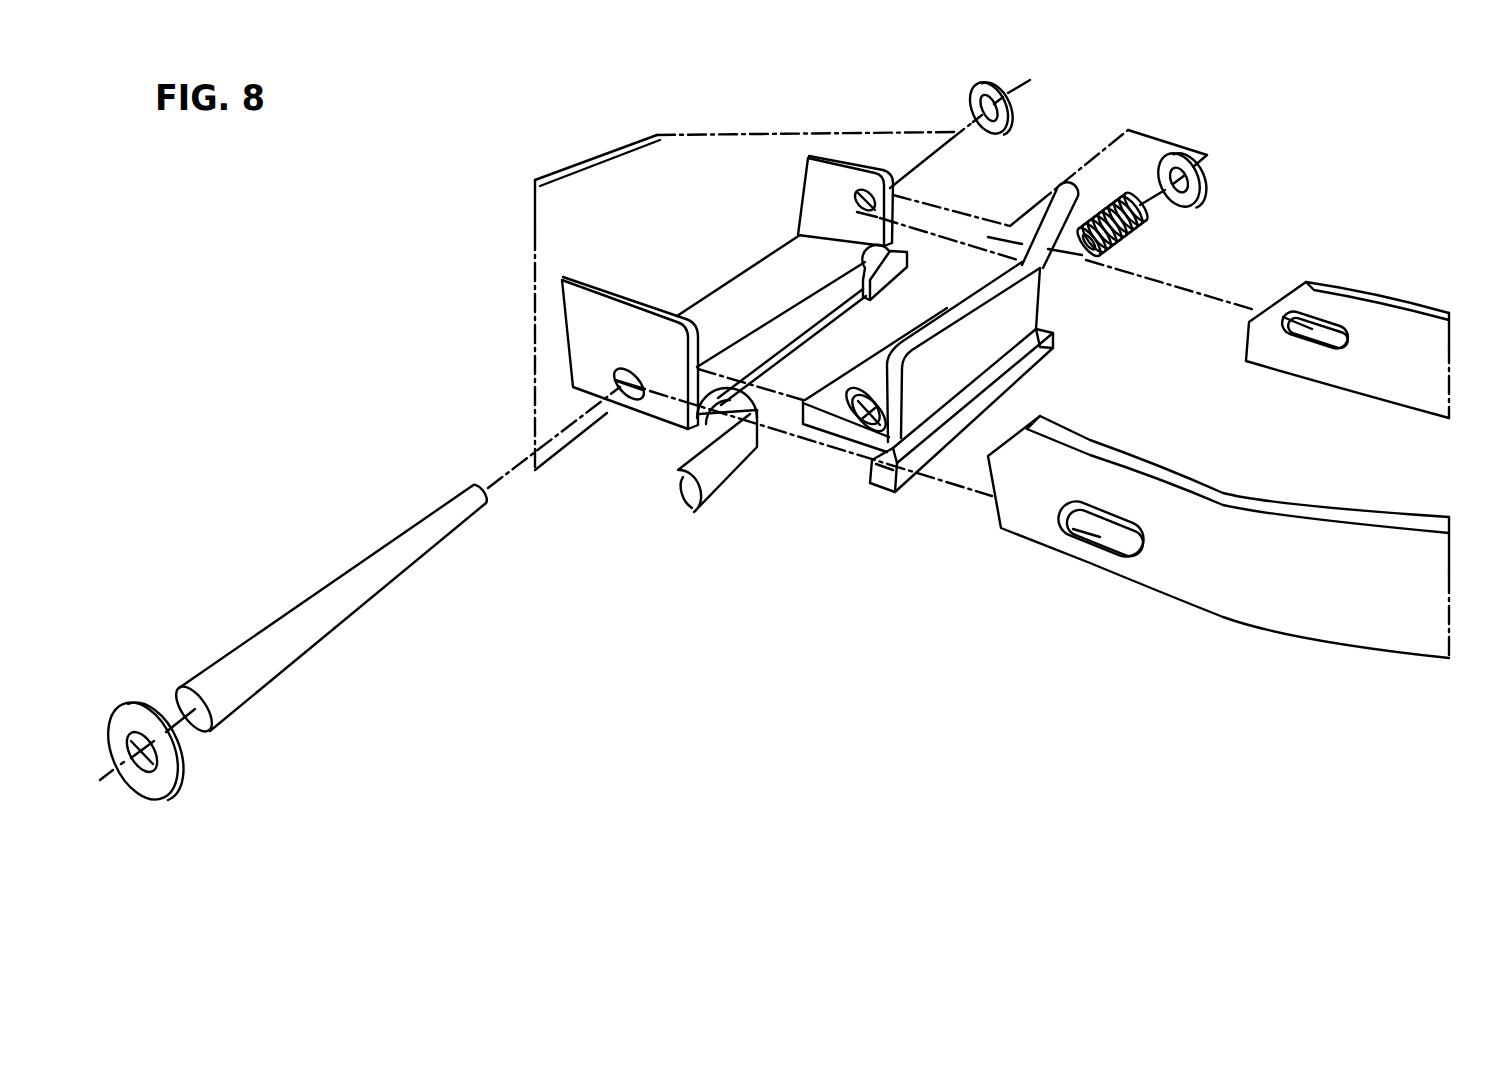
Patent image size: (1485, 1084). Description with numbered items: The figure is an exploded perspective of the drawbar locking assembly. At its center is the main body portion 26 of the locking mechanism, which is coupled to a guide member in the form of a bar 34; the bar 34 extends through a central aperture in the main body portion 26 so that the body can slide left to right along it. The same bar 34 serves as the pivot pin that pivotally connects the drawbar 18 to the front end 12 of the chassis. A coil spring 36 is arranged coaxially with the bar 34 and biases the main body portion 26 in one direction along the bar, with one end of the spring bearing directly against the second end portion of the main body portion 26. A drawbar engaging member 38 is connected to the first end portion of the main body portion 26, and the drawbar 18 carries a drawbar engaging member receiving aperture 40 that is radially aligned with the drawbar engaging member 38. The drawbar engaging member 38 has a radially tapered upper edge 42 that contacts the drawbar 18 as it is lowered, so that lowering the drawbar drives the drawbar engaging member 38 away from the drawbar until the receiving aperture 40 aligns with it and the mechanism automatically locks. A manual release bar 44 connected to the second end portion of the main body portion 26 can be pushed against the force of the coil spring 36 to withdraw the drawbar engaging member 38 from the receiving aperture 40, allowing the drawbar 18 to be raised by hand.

The front end of the chassis 12 is at (690, 227).
The drawbar 18 is at (1427, 342).
The main body portion 26 is at (982, 362).
The bar 34 is at (452, 511).
The coil spring 36 is at (1133, 228).
The drawbar engaging member 38 is at (905, 477).
The drawbar engaging member receiving aperture 40 is at (1329, 333).
The radially tapered upper edge 42 is at (885, 477).
The manual release bar 44 is at (1065, 191).